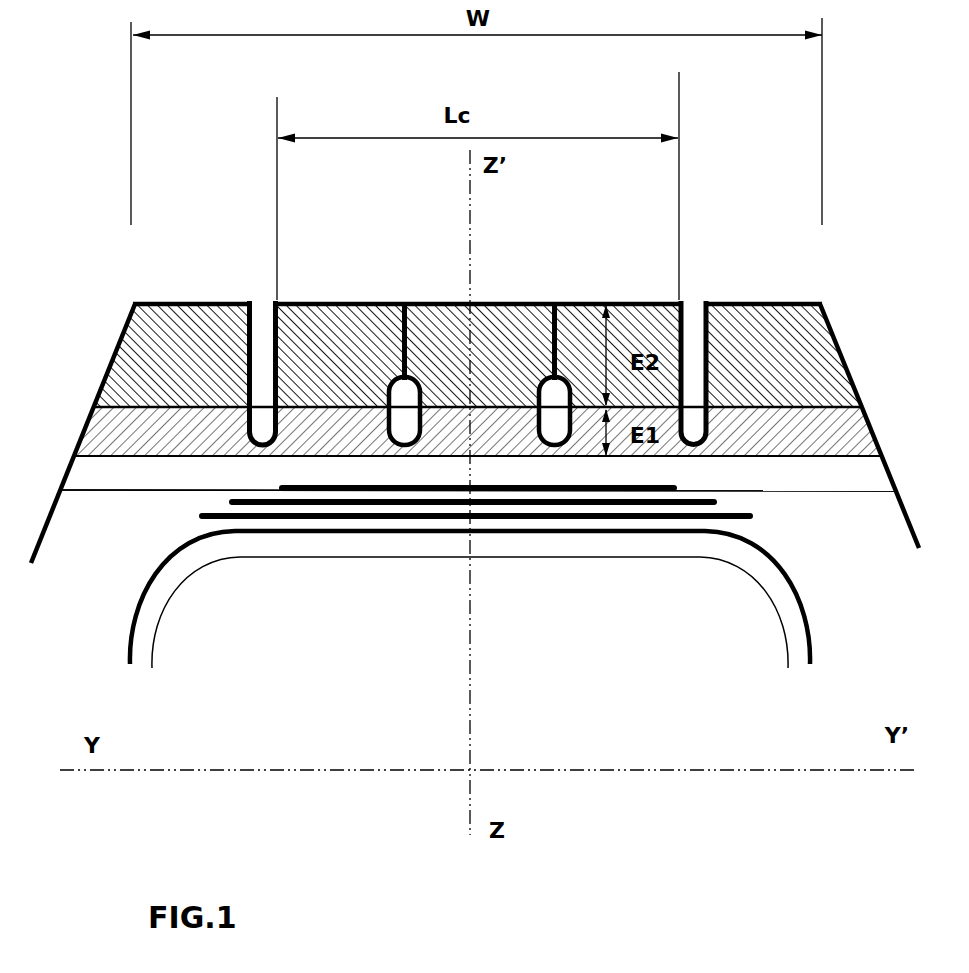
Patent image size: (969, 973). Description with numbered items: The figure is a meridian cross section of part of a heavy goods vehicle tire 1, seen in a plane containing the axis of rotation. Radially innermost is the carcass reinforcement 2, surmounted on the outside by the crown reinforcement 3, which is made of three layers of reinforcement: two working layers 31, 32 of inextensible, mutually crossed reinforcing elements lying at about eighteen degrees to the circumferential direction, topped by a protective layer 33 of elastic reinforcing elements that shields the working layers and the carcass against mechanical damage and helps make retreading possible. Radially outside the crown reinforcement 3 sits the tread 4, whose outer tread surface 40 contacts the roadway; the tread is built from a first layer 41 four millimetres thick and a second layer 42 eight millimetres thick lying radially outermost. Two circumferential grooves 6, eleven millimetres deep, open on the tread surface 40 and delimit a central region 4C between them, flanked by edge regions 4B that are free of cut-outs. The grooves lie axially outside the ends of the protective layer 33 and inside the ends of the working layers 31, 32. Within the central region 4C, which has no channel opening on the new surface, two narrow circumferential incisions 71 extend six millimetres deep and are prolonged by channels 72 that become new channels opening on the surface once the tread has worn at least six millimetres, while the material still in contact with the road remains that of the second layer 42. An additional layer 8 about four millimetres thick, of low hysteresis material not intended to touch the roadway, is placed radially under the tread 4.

The tire 1 is at (97, 272).
The carcass reinforcement 2 is at (165, 582).
The crown reinforcement 3 is at (207, 517).
The working layer 31 is at (752, 518).
The working layer 32 is at (717, 501).
The protective layer 33 is at (674, 485).
The tread 4 is at (165, 320).
The edge region 4B is at (196, 320).
The central region 4C is at (450, 333).
The tread surface 40 is at (805, 292).
The first layer 41 is at (108, 443).
The second layer 42 is at (145, 358).
The circumferential groove 6 is at (262, 318).
The additional layer 8 is at (103, 470).
The circumferential incision 71 is at (402, 335).
The channel 72 is at (398, 397).